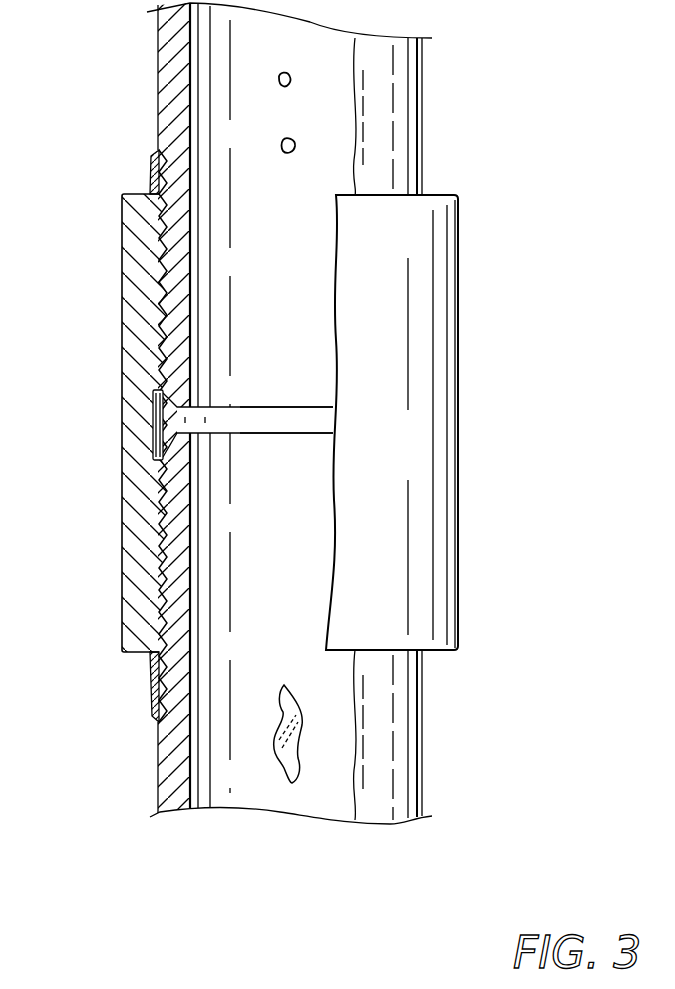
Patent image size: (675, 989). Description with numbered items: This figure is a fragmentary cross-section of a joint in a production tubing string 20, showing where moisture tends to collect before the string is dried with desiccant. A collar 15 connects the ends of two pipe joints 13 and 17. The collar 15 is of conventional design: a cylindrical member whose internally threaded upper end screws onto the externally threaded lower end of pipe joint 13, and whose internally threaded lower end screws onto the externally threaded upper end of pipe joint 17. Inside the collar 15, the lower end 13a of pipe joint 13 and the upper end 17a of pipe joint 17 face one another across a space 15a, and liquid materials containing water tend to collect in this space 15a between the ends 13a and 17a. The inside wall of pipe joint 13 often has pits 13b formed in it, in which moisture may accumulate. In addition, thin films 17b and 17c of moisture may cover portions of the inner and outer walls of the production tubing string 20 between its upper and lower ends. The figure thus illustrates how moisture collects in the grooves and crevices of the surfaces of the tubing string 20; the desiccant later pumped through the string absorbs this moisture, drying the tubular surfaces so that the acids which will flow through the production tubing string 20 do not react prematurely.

The pipe joint 13 is at (417, 112).
The end of pipe joint 13 13a is at (250, 410).
The pits 13b is at (287, 138).
The collar 15 is at (457, 312).
The space 15a is at (160, 431).
The pipe joint 17 is at (415, 742).
The end of pipe joint 17 17a is at (308, 434).
The thin film of moisture 17b is at (278, 773).
The thin film of moisture 17c is at (150, 186).
The production tubing string 20 is at (148, 736).